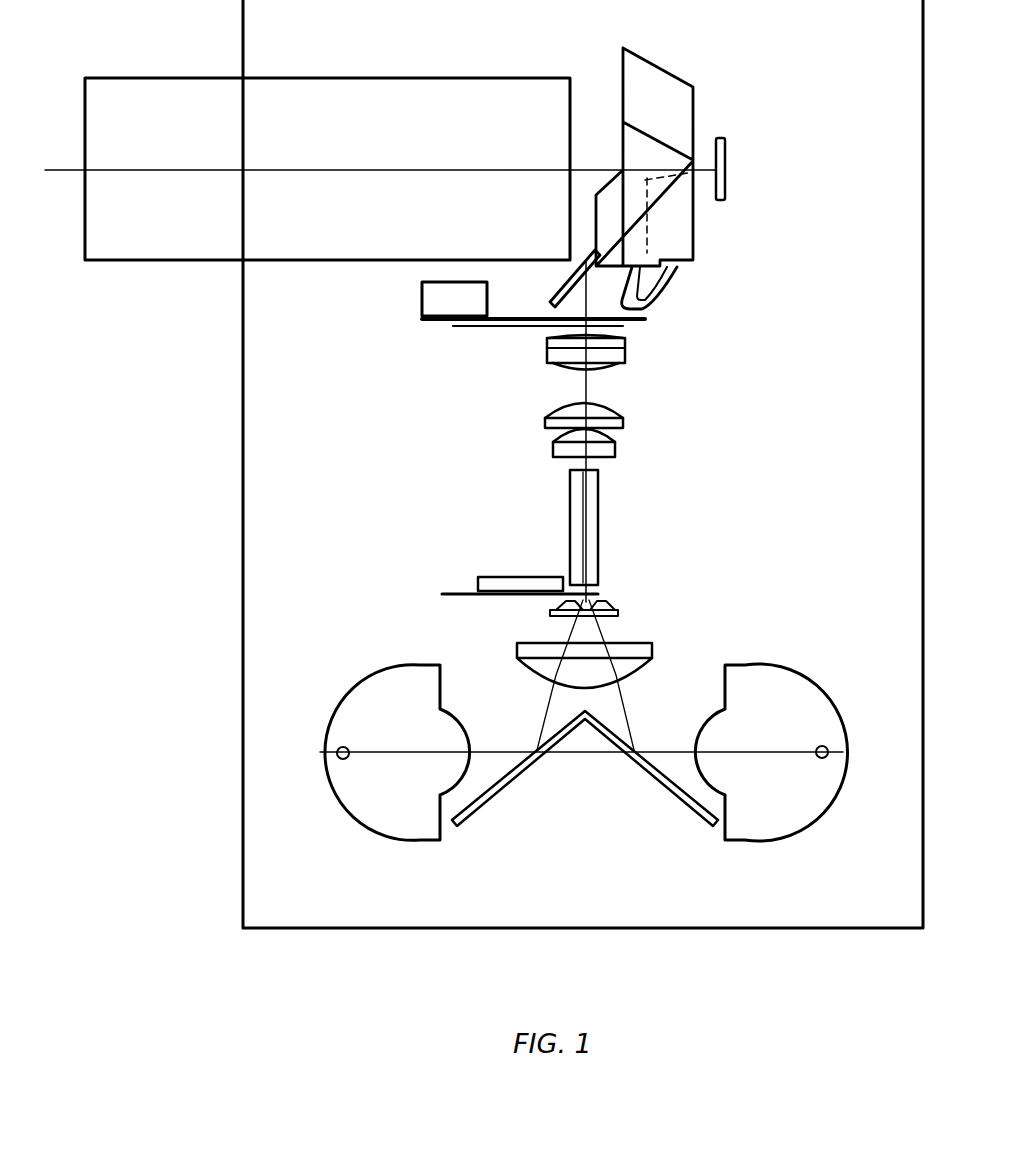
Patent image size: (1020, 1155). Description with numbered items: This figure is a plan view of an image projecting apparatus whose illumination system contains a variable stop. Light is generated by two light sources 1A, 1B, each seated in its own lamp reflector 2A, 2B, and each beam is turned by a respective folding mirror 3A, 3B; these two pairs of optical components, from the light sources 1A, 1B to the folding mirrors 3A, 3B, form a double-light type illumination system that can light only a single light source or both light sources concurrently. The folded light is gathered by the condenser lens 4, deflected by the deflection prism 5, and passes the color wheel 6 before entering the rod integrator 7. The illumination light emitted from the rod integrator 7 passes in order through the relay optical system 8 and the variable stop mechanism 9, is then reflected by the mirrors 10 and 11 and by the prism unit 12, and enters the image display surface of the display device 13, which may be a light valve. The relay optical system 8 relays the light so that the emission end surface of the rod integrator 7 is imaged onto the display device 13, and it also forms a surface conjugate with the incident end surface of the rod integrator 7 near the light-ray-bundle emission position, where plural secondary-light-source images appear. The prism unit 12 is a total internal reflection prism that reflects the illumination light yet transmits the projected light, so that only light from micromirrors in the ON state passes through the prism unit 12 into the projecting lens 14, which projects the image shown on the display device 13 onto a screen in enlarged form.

The light source 1A is at (338, 760).
The light source 1B is at (828, 760).
The lamp reflector 2A is at (343, 800).
The lamp reflector 2B is at (816, 800).
The folding mirror 3A is at (493, 798).
The folding mirror 3B is at (670, 795).
The condenser lens 4 is at (655, 651).
The deflection prism 5 is at (621, 612).
The color wheel 6 is at (458, 598).
The rod integrator 7 is at (602, 558).
The relay optical system 8 is at (653, 335).
The variable stop mechanism 9 is at (523, 327).
The mirror 10 is at (551, 290).
The mirror 11 is at (672, 292).
The prism unit 12 is at (683, 76).
The display device 13 is at (727, 177).
The projecting lens 14 is at (455, 77).